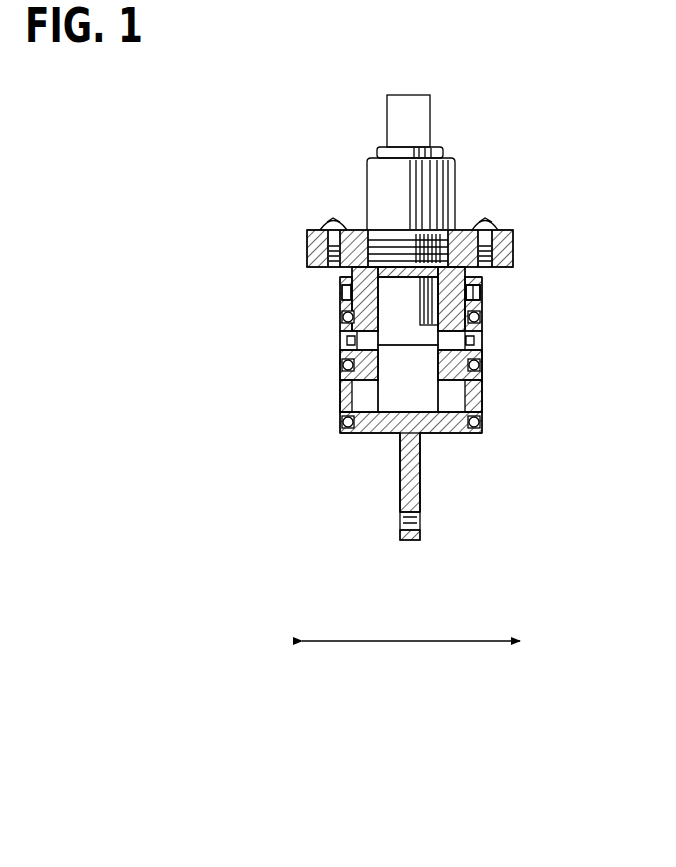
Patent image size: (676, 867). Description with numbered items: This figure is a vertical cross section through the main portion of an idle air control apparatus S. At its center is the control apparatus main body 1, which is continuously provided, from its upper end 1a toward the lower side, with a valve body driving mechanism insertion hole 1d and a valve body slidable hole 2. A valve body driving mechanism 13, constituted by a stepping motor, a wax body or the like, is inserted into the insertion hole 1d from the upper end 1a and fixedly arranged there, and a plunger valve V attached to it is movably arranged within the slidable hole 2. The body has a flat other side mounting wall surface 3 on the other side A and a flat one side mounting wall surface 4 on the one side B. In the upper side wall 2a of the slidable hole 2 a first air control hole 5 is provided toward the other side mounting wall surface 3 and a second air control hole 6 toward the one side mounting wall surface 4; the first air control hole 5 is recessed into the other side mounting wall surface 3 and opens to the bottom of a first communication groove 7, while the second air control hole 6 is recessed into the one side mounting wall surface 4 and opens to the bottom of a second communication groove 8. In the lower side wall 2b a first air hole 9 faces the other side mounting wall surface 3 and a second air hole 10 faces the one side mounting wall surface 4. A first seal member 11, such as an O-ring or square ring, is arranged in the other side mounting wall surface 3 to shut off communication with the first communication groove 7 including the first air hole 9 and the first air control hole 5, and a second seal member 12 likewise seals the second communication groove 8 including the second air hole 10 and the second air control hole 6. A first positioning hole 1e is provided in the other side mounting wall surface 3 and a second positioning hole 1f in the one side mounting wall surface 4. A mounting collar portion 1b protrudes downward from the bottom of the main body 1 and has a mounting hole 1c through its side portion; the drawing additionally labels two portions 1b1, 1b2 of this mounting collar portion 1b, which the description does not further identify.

The idle air control apparatus S is at (366, 27).
The valve body driving mechanism 13 is at (441, 152).
The control apparatus main body 1 is at (466, 437).
The upper end 1a is at (513, 240).
The mounting collar portion 1b is at (408, 542).
The stem first portion 1b1 is at (400, 488).
The stem second portion 1b2 is at (420, 488).
The mounting hole 1c is at (420, 525).
The valve body driving mechanism insertion hole 1d is at (358, 233).
The first positioning hole 1e is at (338, 292).
The second positioning hole 1f is at (480, 288).
The plunger valve V is at (482, 303).
The valve body slidable hole 2 is at (358, 435).
The upper side wall 2a is at (384, 343).
The lower side wall 2b is at (384, 394).
The other side mounting wall surface 3 is at (335, 431).
The one side mounting wall surface 4 is at (482, 435).
The first air control hole 5 is at (340, 345).
The second air control hole 6 is at (480, 343).
The first communication groove 7 is at (340, 337).
The second communication groove 8 is at (480, 337).
The first air hole 9 is at (340, 392).
The second air hole 10 is at (470, 393).
The first seal member 11 is at (340, 423).
The second seal member 12 is at (480, 427).
The other side A is at (340, 644).
The one side B is at (479, 644).